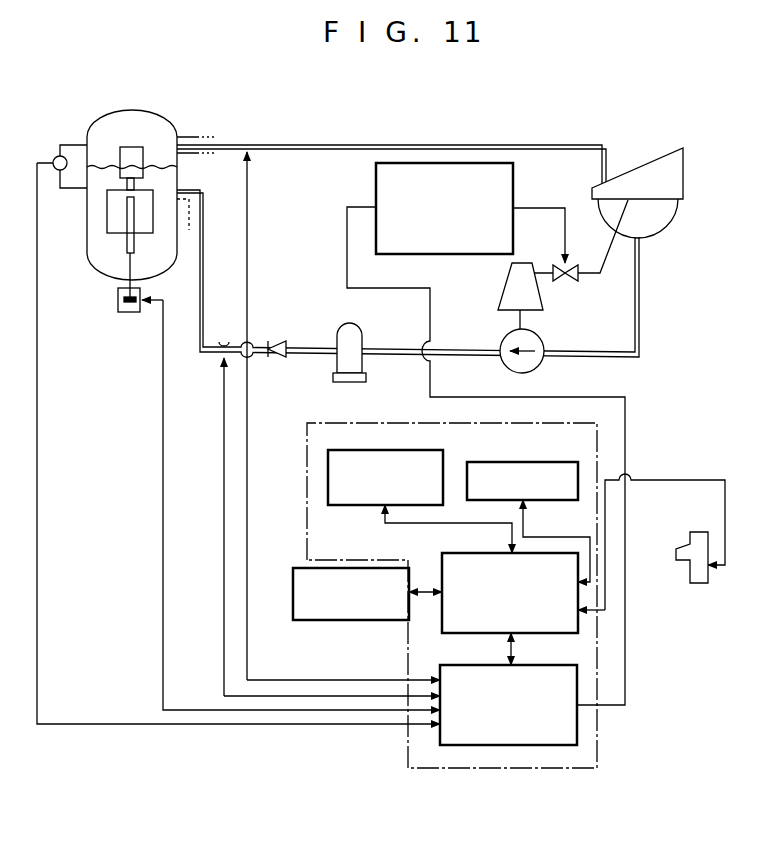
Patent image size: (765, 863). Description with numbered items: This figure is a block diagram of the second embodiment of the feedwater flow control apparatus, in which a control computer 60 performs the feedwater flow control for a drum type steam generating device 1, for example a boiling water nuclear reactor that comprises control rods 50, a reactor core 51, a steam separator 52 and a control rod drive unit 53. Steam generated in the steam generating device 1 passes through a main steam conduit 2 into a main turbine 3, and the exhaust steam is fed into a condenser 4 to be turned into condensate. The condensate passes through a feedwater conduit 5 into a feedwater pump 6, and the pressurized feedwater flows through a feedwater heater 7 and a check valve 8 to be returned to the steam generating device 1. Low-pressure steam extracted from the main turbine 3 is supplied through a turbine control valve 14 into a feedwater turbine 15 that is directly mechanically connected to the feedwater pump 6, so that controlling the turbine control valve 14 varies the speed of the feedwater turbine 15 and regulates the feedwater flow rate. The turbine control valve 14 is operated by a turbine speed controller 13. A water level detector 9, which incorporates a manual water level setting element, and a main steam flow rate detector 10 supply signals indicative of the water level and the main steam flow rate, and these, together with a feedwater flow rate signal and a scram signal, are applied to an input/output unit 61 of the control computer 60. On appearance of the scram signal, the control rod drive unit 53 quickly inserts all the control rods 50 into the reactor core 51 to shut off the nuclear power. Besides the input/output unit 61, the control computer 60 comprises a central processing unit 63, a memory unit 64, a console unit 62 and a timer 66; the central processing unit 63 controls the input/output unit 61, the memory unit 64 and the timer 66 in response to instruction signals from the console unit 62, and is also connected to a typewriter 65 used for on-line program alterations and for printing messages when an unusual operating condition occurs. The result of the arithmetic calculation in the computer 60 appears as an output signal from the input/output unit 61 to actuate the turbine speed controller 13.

The drum type steam generating device 1 is at (97, 262).
The main steam conduit 2 is at (420, 146).
The main turbine 3 is at (650, 160).
The condenser 4 is at (674, 222).
The feedwater conduit 5 is at (588, 358).
The feedwater pump 6 is at (540, 368).
The feedwater heater 7 is at (362, 343).
The check valve 8 is at (284, 345).
The water level detector 9 is at (57, 174).
The main steam flow rate detector 10 is at (246, 143).
The turbine speed controller 13 is at (513, 185).
The turbine control valve 14 is at (572, 281).
The feedwater turbine 15 is at (503, 293).
The control rods 50 is at (127, 252).
The reactor core 51 is at (107, 222).
The steam separator 52 is at (130, 147).
The control rod drive unit 53 is at (130, 313).
The control computer 60 is at (475, 770).
The input/output unit 61 is at (577, 731).
The console unit 62 is at (293, 578).
The central processing unit 63 is at (578, 615).
The memory unit 64 is at (415, 450).
The typewriter 65 is at (705, 585).
The timer 66 is at (552, 462).